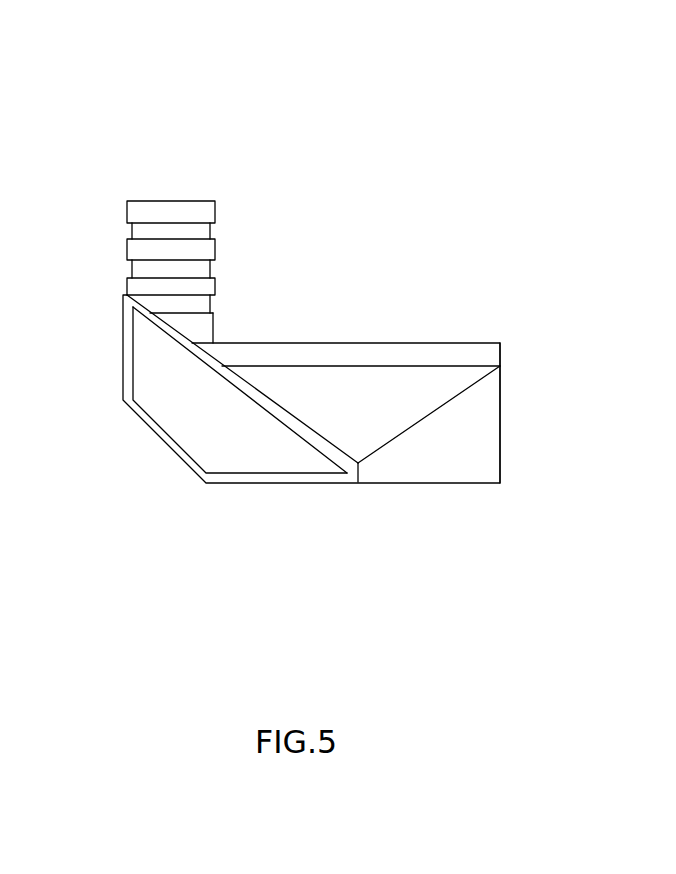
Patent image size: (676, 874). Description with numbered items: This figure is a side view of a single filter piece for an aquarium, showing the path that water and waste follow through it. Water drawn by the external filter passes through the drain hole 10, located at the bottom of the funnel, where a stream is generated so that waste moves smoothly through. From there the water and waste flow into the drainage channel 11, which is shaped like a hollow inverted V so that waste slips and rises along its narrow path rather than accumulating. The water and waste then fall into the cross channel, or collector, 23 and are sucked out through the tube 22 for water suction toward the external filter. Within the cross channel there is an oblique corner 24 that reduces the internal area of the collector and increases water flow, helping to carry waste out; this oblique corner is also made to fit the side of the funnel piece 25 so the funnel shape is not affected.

The tube for water suction 22 is at (170, 173).
The cross channel (collector) 23 is at (167, 401).
The oblique corner 24 is at (170, 481).
The side of the funnel piece 25 is at (252, 360).
The drain hole 10 is at (360, 515).
The drainage channel 11 is at (524, 473).